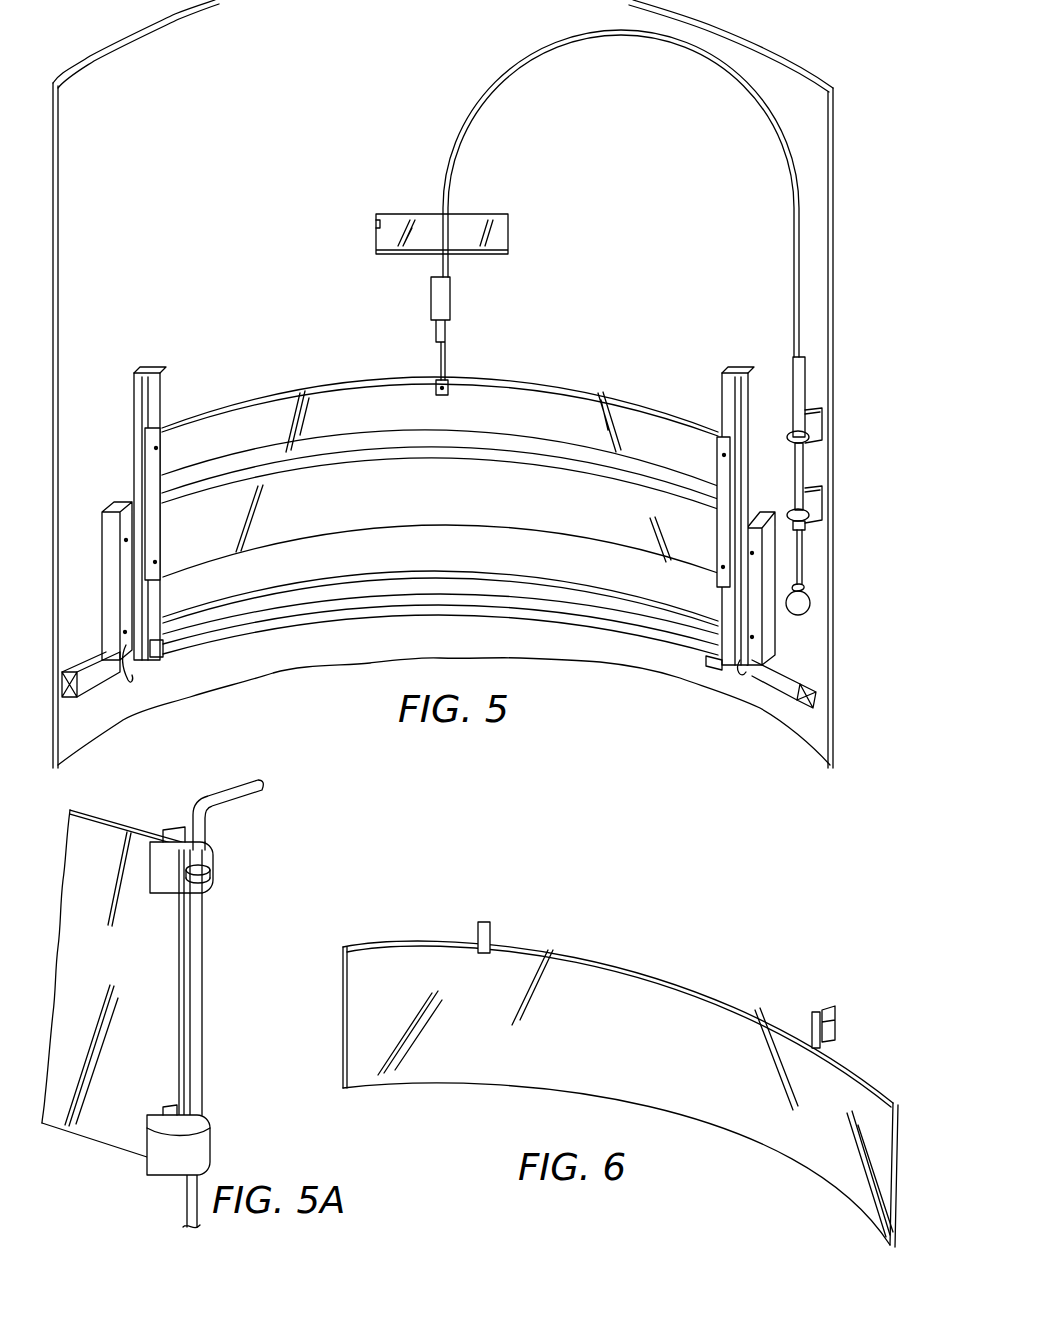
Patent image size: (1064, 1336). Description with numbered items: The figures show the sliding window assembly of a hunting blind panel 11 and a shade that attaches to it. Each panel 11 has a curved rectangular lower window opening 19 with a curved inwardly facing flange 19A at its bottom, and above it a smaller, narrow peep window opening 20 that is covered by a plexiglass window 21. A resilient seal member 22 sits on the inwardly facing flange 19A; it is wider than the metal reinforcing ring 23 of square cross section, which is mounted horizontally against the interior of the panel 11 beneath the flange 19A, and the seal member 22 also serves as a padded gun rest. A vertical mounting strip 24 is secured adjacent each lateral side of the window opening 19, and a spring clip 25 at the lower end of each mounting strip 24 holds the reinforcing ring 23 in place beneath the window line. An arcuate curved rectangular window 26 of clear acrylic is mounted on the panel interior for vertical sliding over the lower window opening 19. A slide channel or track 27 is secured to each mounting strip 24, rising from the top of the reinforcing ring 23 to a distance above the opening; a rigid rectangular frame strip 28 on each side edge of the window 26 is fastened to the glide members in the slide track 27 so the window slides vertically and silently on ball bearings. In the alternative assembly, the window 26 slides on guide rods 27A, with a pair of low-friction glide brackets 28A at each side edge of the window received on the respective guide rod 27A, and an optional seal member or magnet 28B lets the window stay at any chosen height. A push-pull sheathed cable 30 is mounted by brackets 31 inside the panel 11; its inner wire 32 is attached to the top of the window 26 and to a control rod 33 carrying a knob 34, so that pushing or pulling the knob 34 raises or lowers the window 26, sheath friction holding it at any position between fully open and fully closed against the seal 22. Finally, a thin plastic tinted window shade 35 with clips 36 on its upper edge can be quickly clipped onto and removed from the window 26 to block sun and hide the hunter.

In FIG. 5, the panel 11 is at (262, 86).
In FIG. 5, the lower window opening 19 is at (483, 463).
In FIG. 5, the inwardly facing flange 19A is at (160, 662).
In FIG. 5, the peep window opening 20 is at (376, 232).
In FIG. 5, the plexiglass window 21 is at (506, 228).
In FIG. 5, the resilient seal member 22 is at (375, 605).
In FIG. 5, the reinforcing ring 23 is at (777, 722).
In FIG. 5, the mounting strip 24 is at (120, 575).
In FIG. 5, the spring clip 25 is at (123, 668).
In FIG. 5, the curved window 26 is at (250, 393).
In FIG. 5A, the curved window 26 is at (75, 845).
In FIG. 5, the slide track 27 is at (142, 366).
In FIG. 5A, the guide rod 27A is at (204, 998).
In FIG. 5, the frame strip 28 is at (145, 455).
In FIG. 5A, the glide bracket 28A is at (214, 860).
In FIG. 5A, the seal member or magnet 28B is at (215, 871).
In FIG. 5, the push-pull sheathed cable 30 is at (658, 37).
In FIG. 5, the bracket 31 is at (430, 285).
In FIG. 5, the inner wire 32 is at (450, 372).
In FIG. 5, the control rod 33 is at (802, 568).
In FIG. 5, the knob 34 is at (810, 607).
In FIG. 6, the window shade 35 is at (572, 1072).
In FIG. 6, the clip 36 is at (490, 934).